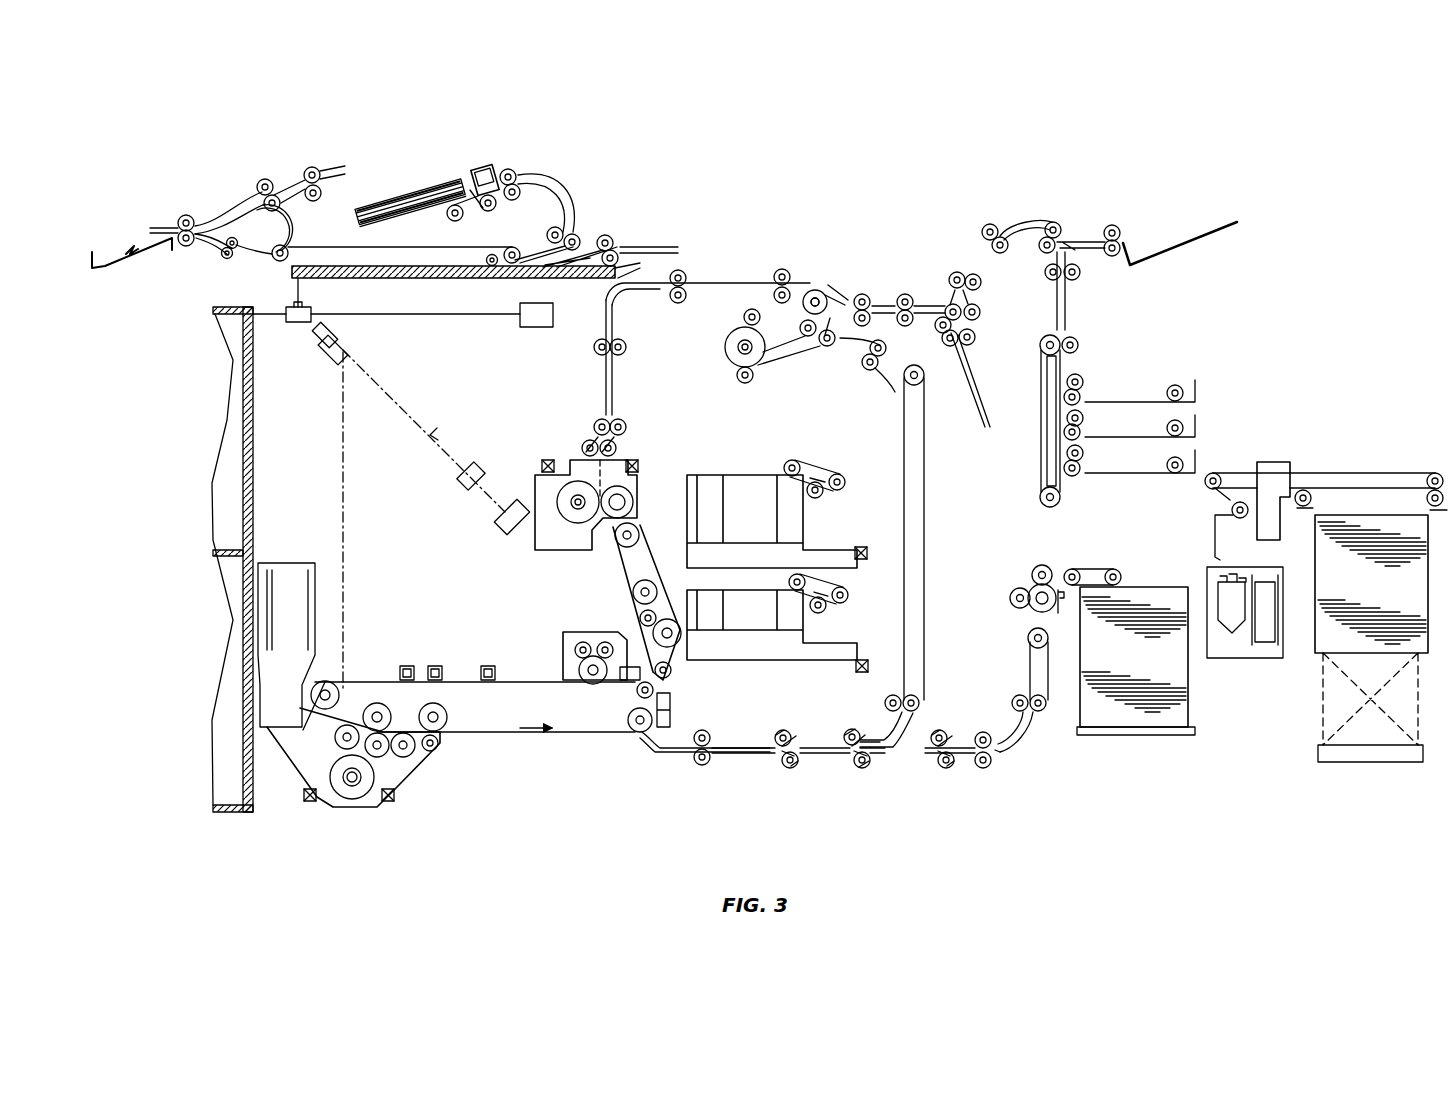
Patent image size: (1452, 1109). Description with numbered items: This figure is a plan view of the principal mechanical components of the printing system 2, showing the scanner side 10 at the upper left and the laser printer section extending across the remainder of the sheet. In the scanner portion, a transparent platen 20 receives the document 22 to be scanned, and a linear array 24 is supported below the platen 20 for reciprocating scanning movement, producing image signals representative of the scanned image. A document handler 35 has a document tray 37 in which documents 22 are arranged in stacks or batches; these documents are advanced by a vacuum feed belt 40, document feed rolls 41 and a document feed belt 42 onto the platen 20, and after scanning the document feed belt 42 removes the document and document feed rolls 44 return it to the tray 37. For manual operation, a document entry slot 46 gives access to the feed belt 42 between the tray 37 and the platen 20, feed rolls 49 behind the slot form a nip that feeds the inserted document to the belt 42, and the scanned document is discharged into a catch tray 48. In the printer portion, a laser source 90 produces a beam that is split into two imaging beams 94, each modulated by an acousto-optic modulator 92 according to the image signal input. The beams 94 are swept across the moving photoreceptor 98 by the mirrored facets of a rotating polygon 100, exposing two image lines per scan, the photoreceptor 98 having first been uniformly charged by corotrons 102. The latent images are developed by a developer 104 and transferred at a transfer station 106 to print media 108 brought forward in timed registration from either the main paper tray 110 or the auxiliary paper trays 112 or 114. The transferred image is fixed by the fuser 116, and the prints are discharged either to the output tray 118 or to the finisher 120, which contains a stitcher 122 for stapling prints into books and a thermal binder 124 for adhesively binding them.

The printing system 2 is at (800, 196).
The web input section 10 is at (211, 196).
The transparent platen 20 is at (450, 278).
The document 22 is at (393, 228).
The linear array 24 is at (291, 306).
The document handler 35 is at (420, 176).
The document tray 37 is at (396, 226).
The vacuum feed belt 40 is at (497, 208).
The document feed rolls 41 is at (525, 172).
The document feed belt 42 is at (460, 247).
The document feed rolls 44 is at (280, 205).
The document entry slot 46 is at (642, 238).
The catch tray 48 is at (146, 254).
The feed rolls 49 is at (604, 242).
The laser source 90 is at (507, 524).
The acousto-optic modulator 92 is at (474, 470).
The imaging beams 94 is at (447, 427).
The photoreceptor 98 is at (515, 683).
The rotating polygon 100 is at (333, 350).
The corotrons 102 is at (487, 665).
The developer 104 is at (417, 770).
The transfer station 106 is at (641, 752).
The print media 108 is at (1257, 698).
The main paper tray 110 is at (1115, 734).
The auxiliary paper tray 112 is at (742, 658).
The auxiliary paper tray 114 is at (742, 480).
The fuser 116 is at (652, 482).
The output tray 118 is at (1213, 238).
The finisher 120 is at (1250, 400).
The stitcher 122 is at (1193, 413).
The thermal binder 124 is at (1350, 463).